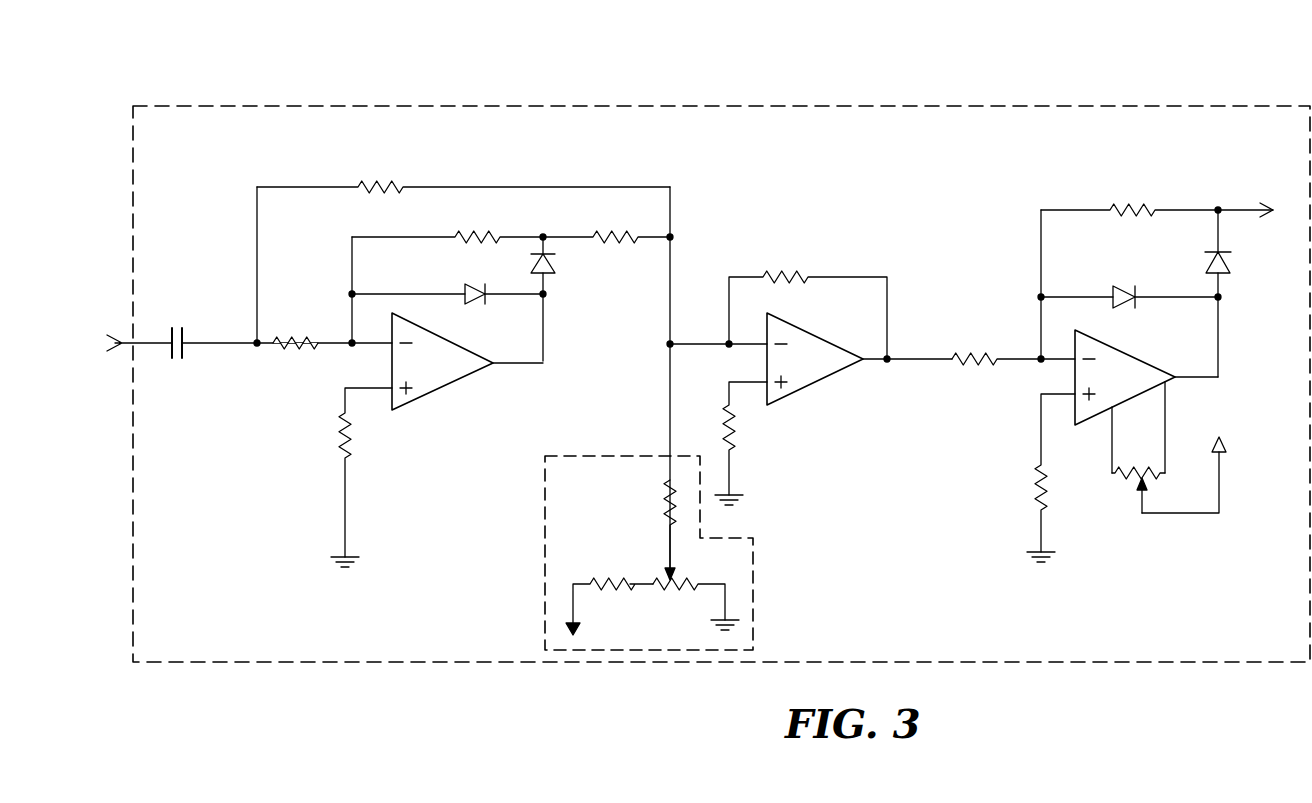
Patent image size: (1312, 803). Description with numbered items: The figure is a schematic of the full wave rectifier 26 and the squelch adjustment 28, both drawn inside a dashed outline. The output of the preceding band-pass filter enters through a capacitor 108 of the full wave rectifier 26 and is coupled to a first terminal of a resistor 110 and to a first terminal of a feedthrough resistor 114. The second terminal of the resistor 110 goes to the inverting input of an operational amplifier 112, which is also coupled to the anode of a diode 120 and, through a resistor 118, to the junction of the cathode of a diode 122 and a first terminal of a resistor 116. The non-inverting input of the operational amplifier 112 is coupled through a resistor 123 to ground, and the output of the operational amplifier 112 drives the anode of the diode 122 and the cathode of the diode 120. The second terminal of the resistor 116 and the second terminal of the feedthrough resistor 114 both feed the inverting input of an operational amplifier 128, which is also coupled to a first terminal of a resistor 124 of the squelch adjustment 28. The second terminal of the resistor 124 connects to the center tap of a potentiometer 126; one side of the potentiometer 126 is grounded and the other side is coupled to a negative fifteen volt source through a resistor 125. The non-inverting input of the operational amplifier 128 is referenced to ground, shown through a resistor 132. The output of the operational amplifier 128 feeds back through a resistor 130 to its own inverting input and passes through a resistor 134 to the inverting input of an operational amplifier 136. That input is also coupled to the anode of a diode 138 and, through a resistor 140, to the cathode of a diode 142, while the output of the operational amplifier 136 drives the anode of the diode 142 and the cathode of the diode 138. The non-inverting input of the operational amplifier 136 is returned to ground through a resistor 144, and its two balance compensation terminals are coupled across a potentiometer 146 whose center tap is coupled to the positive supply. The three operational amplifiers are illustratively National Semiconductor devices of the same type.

The full wave rectifier 26 is at (192, 106).
The squelch adjustment 28 is at (755, 597).
The capacitor 108 is at (182, 356).
The resistor 110 is at (294, 352).
The operational amplifier 112 is at (450, 385).
The feedthrough resistor 114 is at (381, 183).
The resistor 116 is at (609, 236).
The resistor 118 is at (470, 236).
The diode 120 is at (476, 266).
The diode 122 is at (557, 262).
The resistor 123 is at (340, 456).
The resistor 124 is at (663, 514).
The resistor 125 is at (601, 582).
The potentiometer 126 is at (674, 596).
The operational amplifier 128 is at (812, 322).
The resistor 130 is at (814, 254).
The resistor 132 is at (738, 438).
The resistor 134 is at (975, 370).
The operational amplifier 136 is at (1130, 366).
The diode 138 is at (1132, 265).
The resistor 140 is at (1138, 206).
The diode 142 is at (1230, 270).
The resistor 144 is at (1032, 490).
The potentiometer 146 is at (1146, 453).